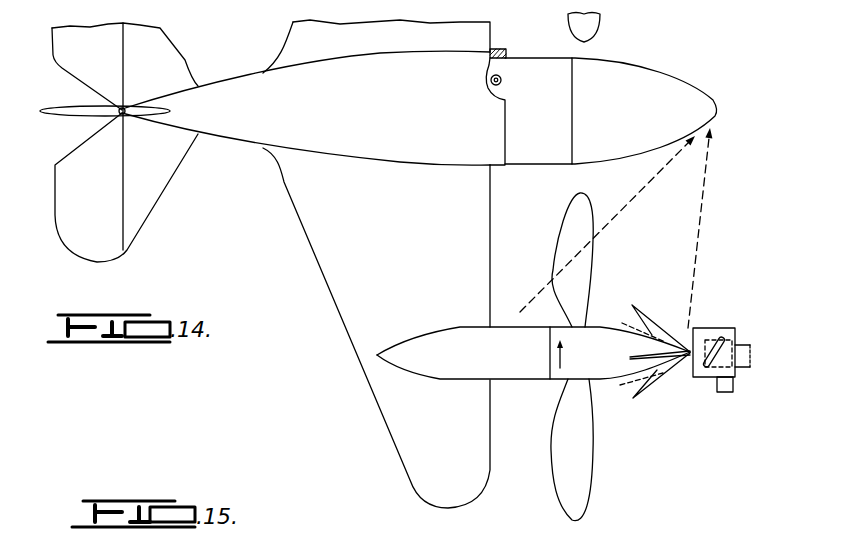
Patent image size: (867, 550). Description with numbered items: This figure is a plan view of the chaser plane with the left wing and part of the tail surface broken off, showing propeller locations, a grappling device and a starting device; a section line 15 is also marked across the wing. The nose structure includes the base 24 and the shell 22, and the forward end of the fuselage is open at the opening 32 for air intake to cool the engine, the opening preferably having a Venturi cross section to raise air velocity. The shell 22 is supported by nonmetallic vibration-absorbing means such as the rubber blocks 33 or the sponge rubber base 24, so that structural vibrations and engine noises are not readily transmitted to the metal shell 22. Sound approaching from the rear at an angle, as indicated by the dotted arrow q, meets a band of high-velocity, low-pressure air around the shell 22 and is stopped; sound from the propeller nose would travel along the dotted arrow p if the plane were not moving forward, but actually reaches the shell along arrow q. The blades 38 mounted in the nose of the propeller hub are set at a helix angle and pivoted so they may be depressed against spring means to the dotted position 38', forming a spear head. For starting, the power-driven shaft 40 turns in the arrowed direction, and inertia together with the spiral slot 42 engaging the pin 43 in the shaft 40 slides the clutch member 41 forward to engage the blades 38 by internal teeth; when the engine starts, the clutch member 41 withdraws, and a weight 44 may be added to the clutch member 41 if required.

The section line 15- 15 is at (476, 14).
The shell 22 is at (648, 114).
The base 24 is at (557, 116).
The opening 32 is at (507, 54).
The rubber blocks 33 is at (501, 80).
The blades 38 is at (660, 343).
The depressed position of blades 38' is at (633, 336).
The shaft 40 is at (742, 346).
The clutch member 41 is at (700, 327).
The spiral slot 42 is at (722, 340).
The pin 43 is at (702, 374).
The weight 44 is at (725, 392).
The dotted arrow q is at (620, 208).
The dotted arrow p is at (702, 207).